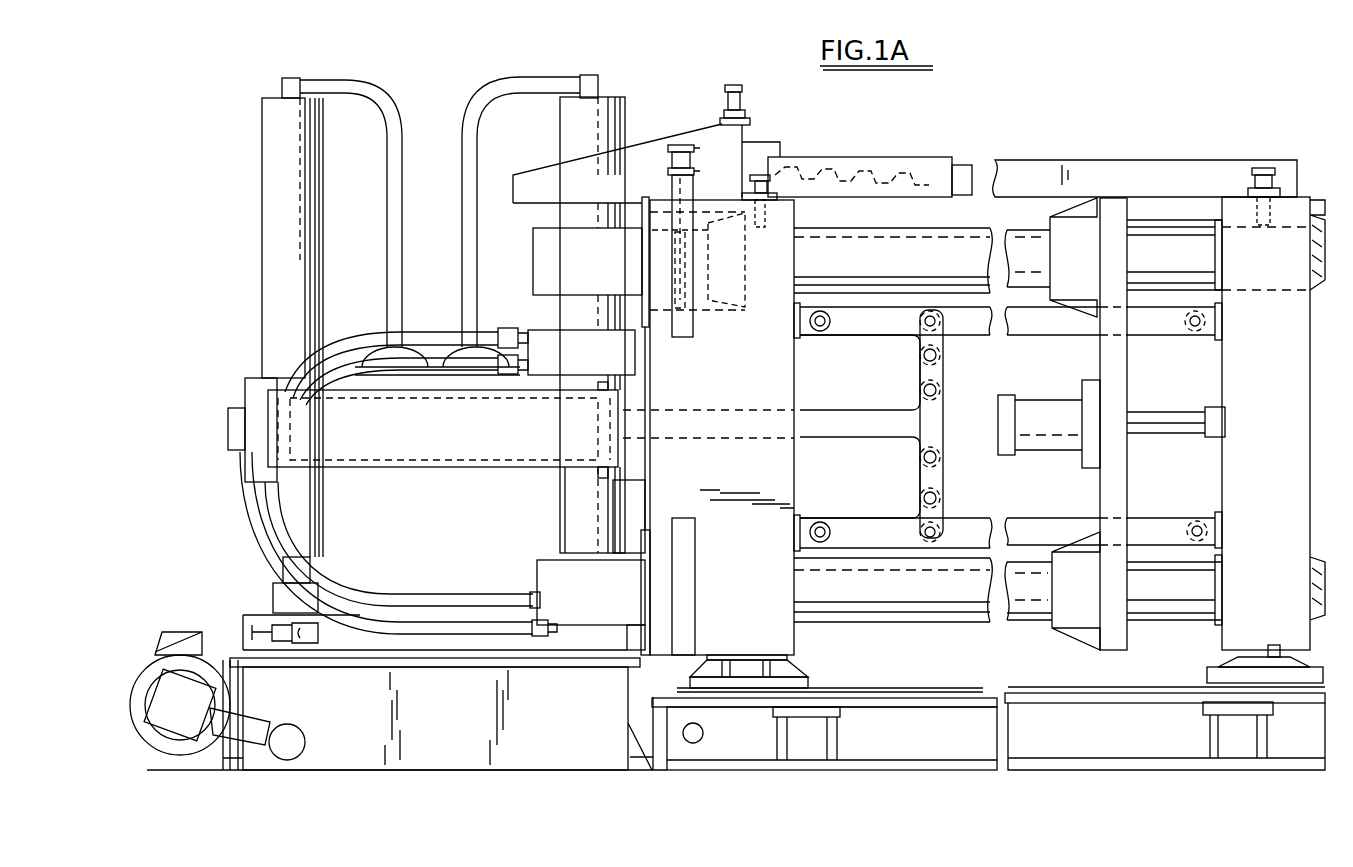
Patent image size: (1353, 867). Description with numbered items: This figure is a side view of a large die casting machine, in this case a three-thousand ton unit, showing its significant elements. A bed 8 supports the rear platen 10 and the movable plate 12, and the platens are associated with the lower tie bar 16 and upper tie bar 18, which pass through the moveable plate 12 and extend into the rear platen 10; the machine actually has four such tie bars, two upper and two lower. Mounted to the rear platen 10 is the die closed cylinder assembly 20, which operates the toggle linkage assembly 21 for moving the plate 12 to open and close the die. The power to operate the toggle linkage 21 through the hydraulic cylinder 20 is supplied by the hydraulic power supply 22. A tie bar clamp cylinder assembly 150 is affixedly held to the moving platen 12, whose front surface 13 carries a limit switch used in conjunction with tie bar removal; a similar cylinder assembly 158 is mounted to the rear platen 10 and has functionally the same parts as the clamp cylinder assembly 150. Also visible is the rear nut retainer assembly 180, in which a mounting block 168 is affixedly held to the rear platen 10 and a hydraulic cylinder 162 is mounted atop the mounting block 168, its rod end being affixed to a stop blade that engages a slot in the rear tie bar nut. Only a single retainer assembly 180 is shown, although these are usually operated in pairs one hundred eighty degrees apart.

The bed 8 is at (727, 692).
The rear platen 10 is at (765, 609).
The movable plate 12 is at (1287, 610).
The front surface 13 is at (1315, 362).
The lower tie bar 16 is at (935, 602).
The upper tie bar 18 is at (930, 245).
The die closed cylinder assembly 20 is at (303, 418).
The toggle linkage assembly 21 is at (900, 465).
The hydraulic power supply 22 is at (246, 557).
The tie bar clamp cylinder assembly 150 is at (1262, 168).
The cylinder assembly 158 is at (758, 174).
The hydraulic cylinder 162 is at (682, 147).
The mounting block 168 is at (672, 184).
The rear nut retainer assembly 180 is at (750, 80).